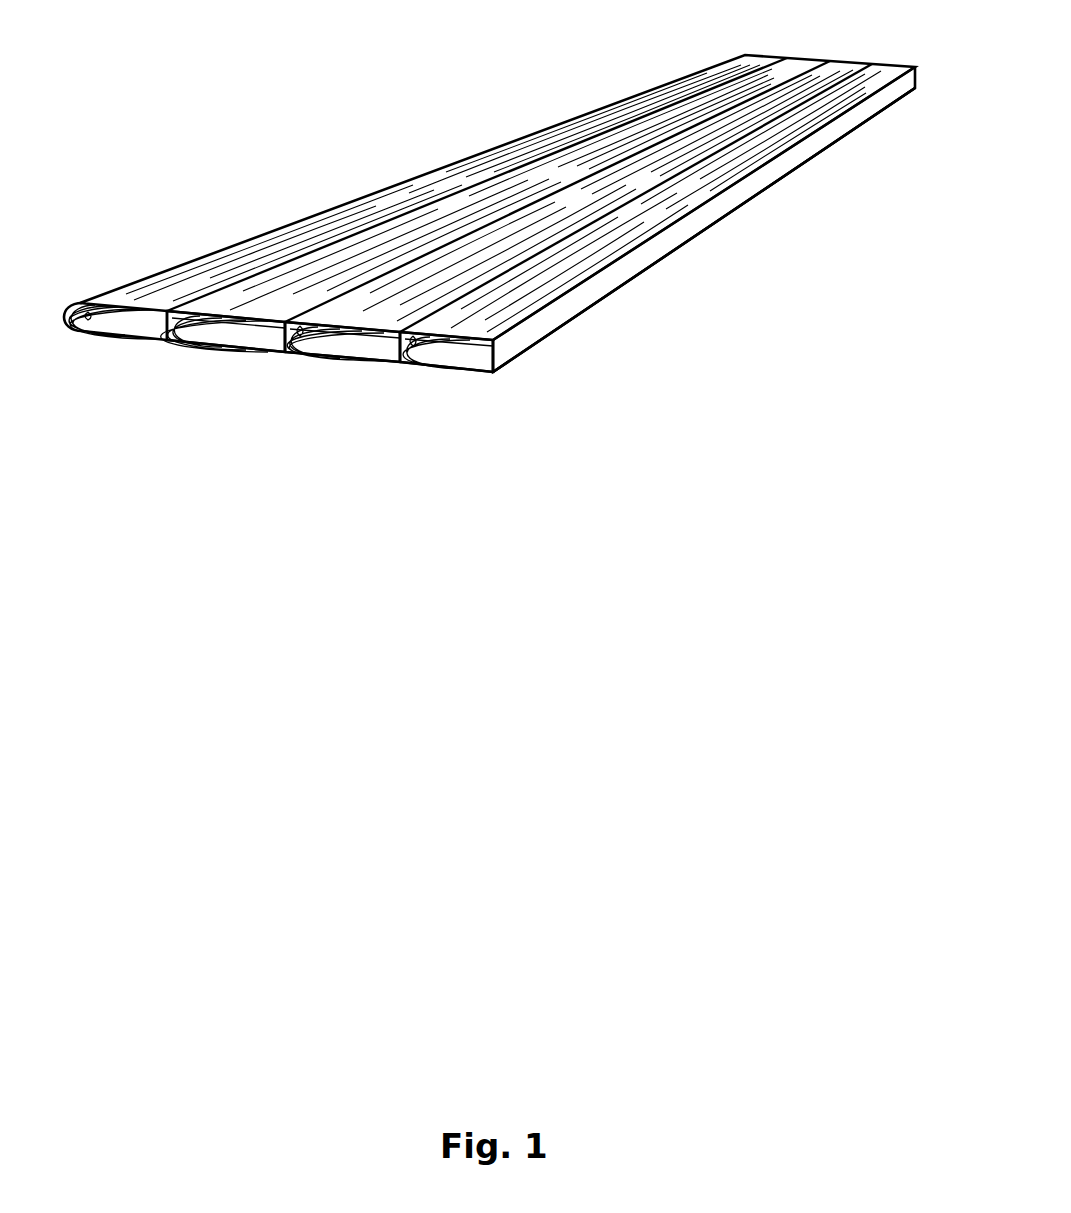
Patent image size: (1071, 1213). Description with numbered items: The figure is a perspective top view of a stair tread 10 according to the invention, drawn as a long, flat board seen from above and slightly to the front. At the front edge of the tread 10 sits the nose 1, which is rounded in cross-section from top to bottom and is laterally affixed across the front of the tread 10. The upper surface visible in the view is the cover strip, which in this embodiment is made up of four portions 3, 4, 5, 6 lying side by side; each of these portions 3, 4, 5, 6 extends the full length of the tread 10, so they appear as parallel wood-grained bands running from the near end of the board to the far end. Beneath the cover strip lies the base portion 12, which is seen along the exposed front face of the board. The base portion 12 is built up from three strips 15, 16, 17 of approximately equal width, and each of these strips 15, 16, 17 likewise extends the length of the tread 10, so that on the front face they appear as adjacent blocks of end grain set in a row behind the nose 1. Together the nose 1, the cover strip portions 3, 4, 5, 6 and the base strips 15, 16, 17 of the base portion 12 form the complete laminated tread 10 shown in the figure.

The tread 10 is at (150, 267).
The nose 1 is at (390, 200).
The cover strip portion 3 is at (537, 167).
The cover strip portion 4 is at (357, 287).
The cover strip portion 5 is at (497, 260).
The cover strip portion 6 is at (715, 183).
The base portion 12 is at (548, 355).
The base strip 15 is at (232, 334).
The base strip 16 is at (343, 343).
The base strip 17 is at (457, 350).